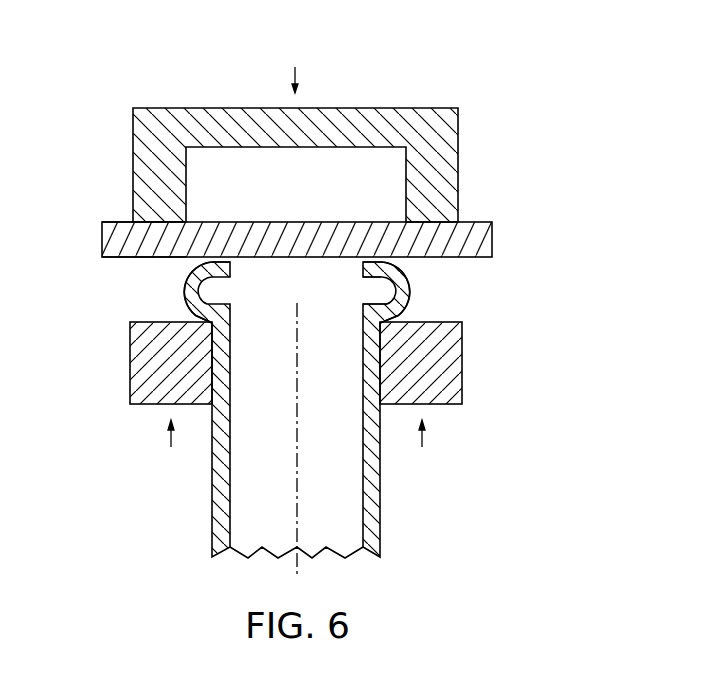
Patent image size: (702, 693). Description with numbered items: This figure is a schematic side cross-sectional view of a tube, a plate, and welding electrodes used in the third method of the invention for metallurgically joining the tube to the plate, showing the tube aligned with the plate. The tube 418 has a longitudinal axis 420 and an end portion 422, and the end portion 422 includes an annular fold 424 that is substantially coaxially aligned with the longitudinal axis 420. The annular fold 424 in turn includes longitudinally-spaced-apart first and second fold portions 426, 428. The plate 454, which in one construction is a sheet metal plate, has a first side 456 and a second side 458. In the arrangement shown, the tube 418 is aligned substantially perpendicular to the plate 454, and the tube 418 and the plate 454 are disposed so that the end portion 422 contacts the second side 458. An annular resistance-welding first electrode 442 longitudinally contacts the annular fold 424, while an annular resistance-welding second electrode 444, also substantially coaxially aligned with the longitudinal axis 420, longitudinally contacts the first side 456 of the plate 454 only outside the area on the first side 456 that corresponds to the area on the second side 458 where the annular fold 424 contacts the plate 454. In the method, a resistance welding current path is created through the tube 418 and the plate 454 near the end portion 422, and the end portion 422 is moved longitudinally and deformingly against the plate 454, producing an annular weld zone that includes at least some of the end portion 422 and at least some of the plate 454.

The tube 418 is at (402, 522).
The longitudinal axis 420 is at (297, 447).
The end portion 422 is at (182, 292).
The annular fold 424 is at (412, 284).
The first fold portion 426 is at (368, 279).
The second fold portion 428 is at (368, 300).
The first electrode 442 is at (455, 357).
The second electrode 444 is at (365, 108).
The plate 454 is at (473, 222).
The first side 456 is at (108, 222).
The second side 458 is at (102, 259).